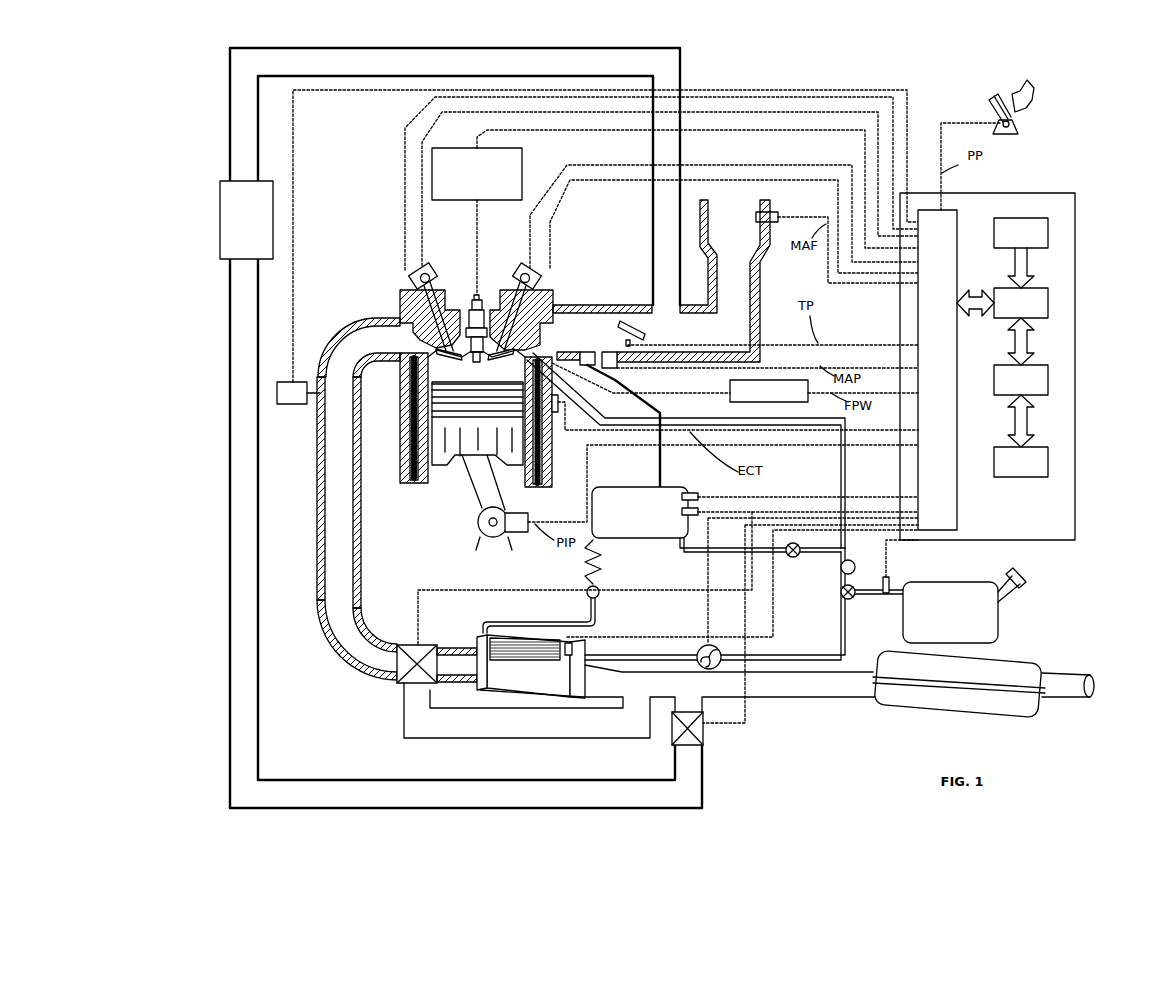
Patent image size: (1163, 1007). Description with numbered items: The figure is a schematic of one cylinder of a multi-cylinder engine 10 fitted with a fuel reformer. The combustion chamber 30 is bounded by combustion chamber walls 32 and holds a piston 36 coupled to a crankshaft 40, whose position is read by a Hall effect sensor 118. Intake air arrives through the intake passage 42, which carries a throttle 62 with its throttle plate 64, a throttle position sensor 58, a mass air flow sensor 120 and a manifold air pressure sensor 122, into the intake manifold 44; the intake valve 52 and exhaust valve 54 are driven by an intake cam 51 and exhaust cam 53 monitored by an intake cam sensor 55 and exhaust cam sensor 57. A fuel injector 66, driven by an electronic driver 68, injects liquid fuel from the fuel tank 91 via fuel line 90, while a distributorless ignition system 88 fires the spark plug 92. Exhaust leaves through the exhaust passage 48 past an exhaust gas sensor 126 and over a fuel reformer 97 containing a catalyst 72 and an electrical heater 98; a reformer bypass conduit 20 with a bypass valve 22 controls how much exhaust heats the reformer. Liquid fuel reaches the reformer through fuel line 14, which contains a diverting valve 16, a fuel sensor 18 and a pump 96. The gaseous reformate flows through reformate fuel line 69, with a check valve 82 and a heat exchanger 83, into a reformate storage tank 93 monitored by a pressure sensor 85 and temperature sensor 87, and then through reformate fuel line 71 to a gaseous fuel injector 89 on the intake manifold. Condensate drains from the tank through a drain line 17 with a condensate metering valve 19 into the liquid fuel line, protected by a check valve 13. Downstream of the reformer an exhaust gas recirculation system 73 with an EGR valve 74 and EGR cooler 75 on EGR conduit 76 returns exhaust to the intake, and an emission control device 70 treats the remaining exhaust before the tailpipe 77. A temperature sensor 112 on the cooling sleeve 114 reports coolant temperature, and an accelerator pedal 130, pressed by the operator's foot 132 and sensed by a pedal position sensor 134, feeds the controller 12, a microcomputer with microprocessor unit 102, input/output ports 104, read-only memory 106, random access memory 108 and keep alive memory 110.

The engine 10 is at (331, 275).
The controller 12 is at (1068, 194).
The check valve 13 is at (838, 570).
The fuel line 14 is at (763, 655).
The valve 16 is at (840, 597).
The drain line 17 is at (728, 553).
The fuel sensor 18 is at (890, 582).
The condensate metering valve 19 is at (798, 546).
The reformer bypass conduit 20 is at (420, 722).
The bypass valve 22 is at (412, 645).
The combustion chamber 30 is at (473, 368).
The combustion chamber walls 32 is at (433, 467).
The piston 36 is at (463, 443).
The crankshaft 40 is at (478, 531).
The intake passage 42 is at (693, 281).
The intake manifold 44 is at (586, 342).
The exhaust passage 48 is at (358, 499).
The intake cam 51 is at (521, 270).
The intake valve 52 is at (512, 347).
The exhaust cam 53 is at (430, 270).
The exhaust valve 54 is at (410, 322).
The intake cam sensor 55 is at (537, 284).
The exhaust cam sensor 57 is at (412, 280).
The throttle position sensor 58 is at (645, 338).
The throttle 62 is at (630, 325).
The throttle plate 64 is at (615, 308).
The fuel injector 66 is at (735, 412).
The electronic driver 68 is at (735, 382).
The reformate fuel line 69 is at (510, 620).
The emission control device 70 is at (912, 705).
The reformate fuel line 71 is at (660, 466).
The catalyst 72 is at (512, 636).
The exhaust gas recirculation system 73 is at (212, 610).
The EGR valve 74 is at (703, 740).
The EGR cooler 75 is at (246, 220).
The EGR conduit 76 is at (230, 428).
The tailpipe 77 is at (1082, 700).
The check valve 82 is at (600, 592).
The heat exchanger 83 is at (600, 560).
The pressure sensor 85 is at (695, 493).
The temperature sensor 87 is at (700, 515).
The distributorless ignition system 88 is at (675, 212).
The gaseous fuel injector 89 is at (587, 350).
The fuel line 90 is at (853, 457).
The fuel tank 91 is at (964, 605).
The spark plug 92 is at (480, 300).
The reformate storage tank 93 is at (640, 512).
The pump 96 is at (720, 648).
The fuel reformer 97 is at (485, 690).
The electrical heater 98 is at (575, 645).
The microprocessor unit 102 is at (1048, 305).
The input/output ports 104 is at (957, 216).
The read-only memory 106 is at (1048, 234).
The random access memory 108 is at (1048, 381).
The keep alive memory 110 is at (1048, 461).
The temperature sensor 112 is at (550, 405).
The cooling sleeve 114 is at (540, 447).
The Hall effect sensor 118 is at (513, 533).
The mass air flow sensor 120 is at (776, 213).
The manifold air pressure sensor 122 is at (608, 368).
The exhaust gas sensor 126 is at (597, 247).
The accelerator pedal 130 is at (990, 104).
The foot 132 is at (1033, 96).
The pedal position sensor 134 is at (1018, 128).